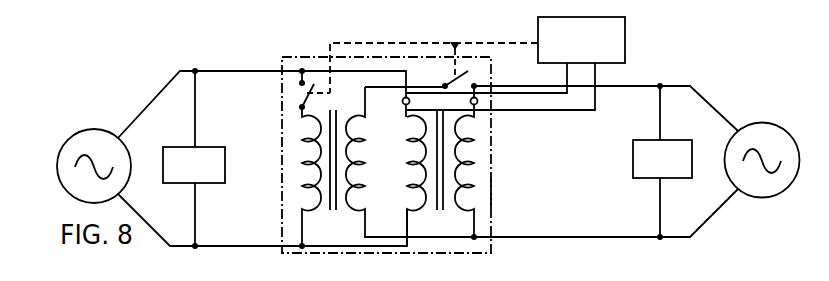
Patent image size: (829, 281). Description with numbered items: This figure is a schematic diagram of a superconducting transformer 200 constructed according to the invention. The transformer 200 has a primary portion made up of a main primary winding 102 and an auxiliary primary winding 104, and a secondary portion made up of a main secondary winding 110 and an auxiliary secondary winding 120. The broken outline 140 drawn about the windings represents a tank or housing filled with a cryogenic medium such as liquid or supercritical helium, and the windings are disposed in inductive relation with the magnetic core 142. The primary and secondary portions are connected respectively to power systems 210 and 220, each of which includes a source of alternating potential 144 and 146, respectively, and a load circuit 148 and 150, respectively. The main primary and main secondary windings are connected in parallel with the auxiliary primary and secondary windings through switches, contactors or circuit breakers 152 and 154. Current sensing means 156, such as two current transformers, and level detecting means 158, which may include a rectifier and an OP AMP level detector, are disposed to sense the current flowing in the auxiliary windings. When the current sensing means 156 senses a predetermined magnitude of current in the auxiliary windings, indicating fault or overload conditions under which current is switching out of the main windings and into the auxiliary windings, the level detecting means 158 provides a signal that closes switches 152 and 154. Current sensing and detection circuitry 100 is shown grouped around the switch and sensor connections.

The switching and sensing circuit 100 is at (527, 72).
The main primary winding 102 is at (310, 143).
The auxiliary primary winding 104 is at (414, 163).
The main secondary winding 110 is at (357, 163).
The auxiliary secondary winding 120 is at (467, 163).
The broken outline 140 is at (493, 196).
The magnetic core 142 is at (333, 207).
The source of alternating potential 144 is at (98, 127).
The source of alternating potential 146 is at (755, 123).
The load circuit 148 is at (187, 148).
The load circuit 150 is at (650, 140).
The switch 152 is at (297, 98).
The switch 154 is at (455, 80).
The current sensing means 156 is at (402, 101).
The level detecting means 158 is at (627, 33).
The superconducting transformer 200 is at (312, 46).
The power system 210 is at (137, 104).
The power system 220 is at (732, 84).